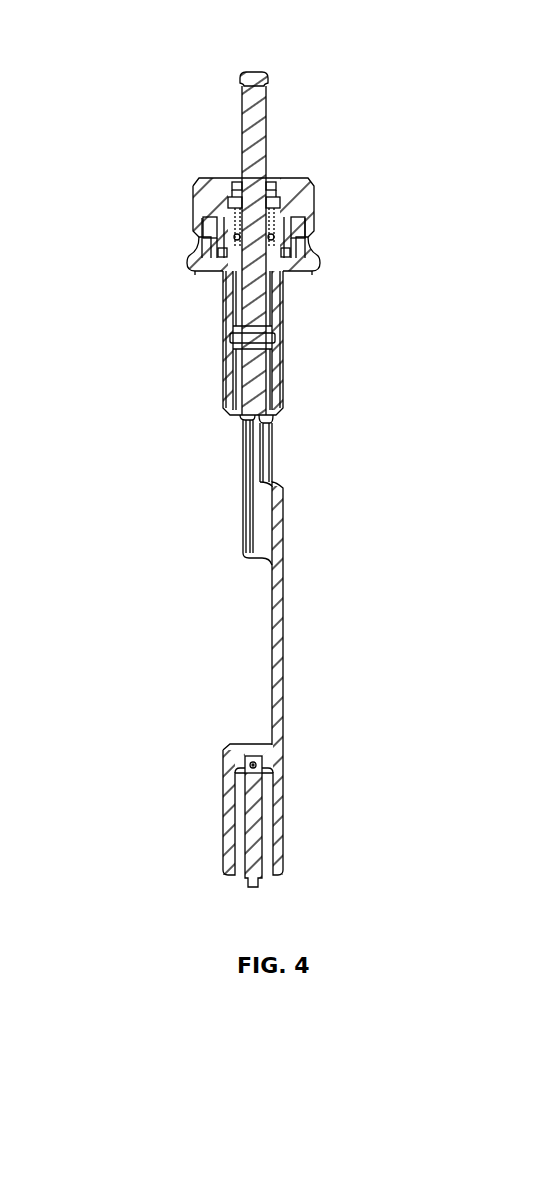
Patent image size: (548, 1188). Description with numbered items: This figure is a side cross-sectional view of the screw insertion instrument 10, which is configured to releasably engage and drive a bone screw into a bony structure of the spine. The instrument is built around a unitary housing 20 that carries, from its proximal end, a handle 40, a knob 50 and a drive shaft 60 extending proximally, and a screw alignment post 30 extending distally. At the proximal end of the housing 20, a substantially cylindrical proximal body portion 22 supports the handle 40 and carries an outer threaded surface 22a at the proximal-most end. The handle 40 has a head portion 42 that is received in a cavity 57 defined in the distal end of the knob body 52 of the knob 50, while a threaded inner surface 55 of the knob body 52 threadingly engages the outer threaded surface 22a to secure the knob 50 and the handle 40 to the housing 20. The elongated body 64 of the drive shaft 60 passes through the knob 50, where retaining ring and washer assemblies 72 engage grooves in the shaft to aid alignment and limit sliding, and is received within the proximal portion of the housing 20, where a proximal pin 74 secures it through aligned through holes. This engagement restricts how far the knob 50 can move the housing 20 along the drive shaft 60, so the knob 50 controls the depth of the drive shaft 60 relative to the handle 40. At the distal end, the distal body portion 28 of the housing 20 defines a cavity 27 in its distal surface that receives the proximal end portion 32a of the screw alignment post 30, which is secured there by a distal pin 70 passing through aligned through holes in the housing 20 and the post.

The screw insertion instrument 10 is at (157, 77).
The drive shaft 60 is at (292, 100).
The proximal body portion 22 is at (272, 292).
The knob 50 is at (175, 192).
The retaining ring and washer assemblies 72 is at (238, 203).
The knob body 52 is at (281, 203).
The outer threaded surface 22a is at (288, 232).
The threaded inner surface 55 is at (225, 228).
The cavity 57 is at (295, 223).
The head portion 42 is at (214, 250).
The handle 40 is at (217, 301).
The elongated body 64 is at (252, 305).
The proximal pin 74 is at (272, 340).
The housing 20 is at (305, 587).
The distal body portion 28 is at (225, 750).
The cavity 27 is at (250, 760).
The distal pin 70 is at (257, 767).
The proximal end portion 32a is at (260, 770).
The screw alignment post 30 is at (243, 888).